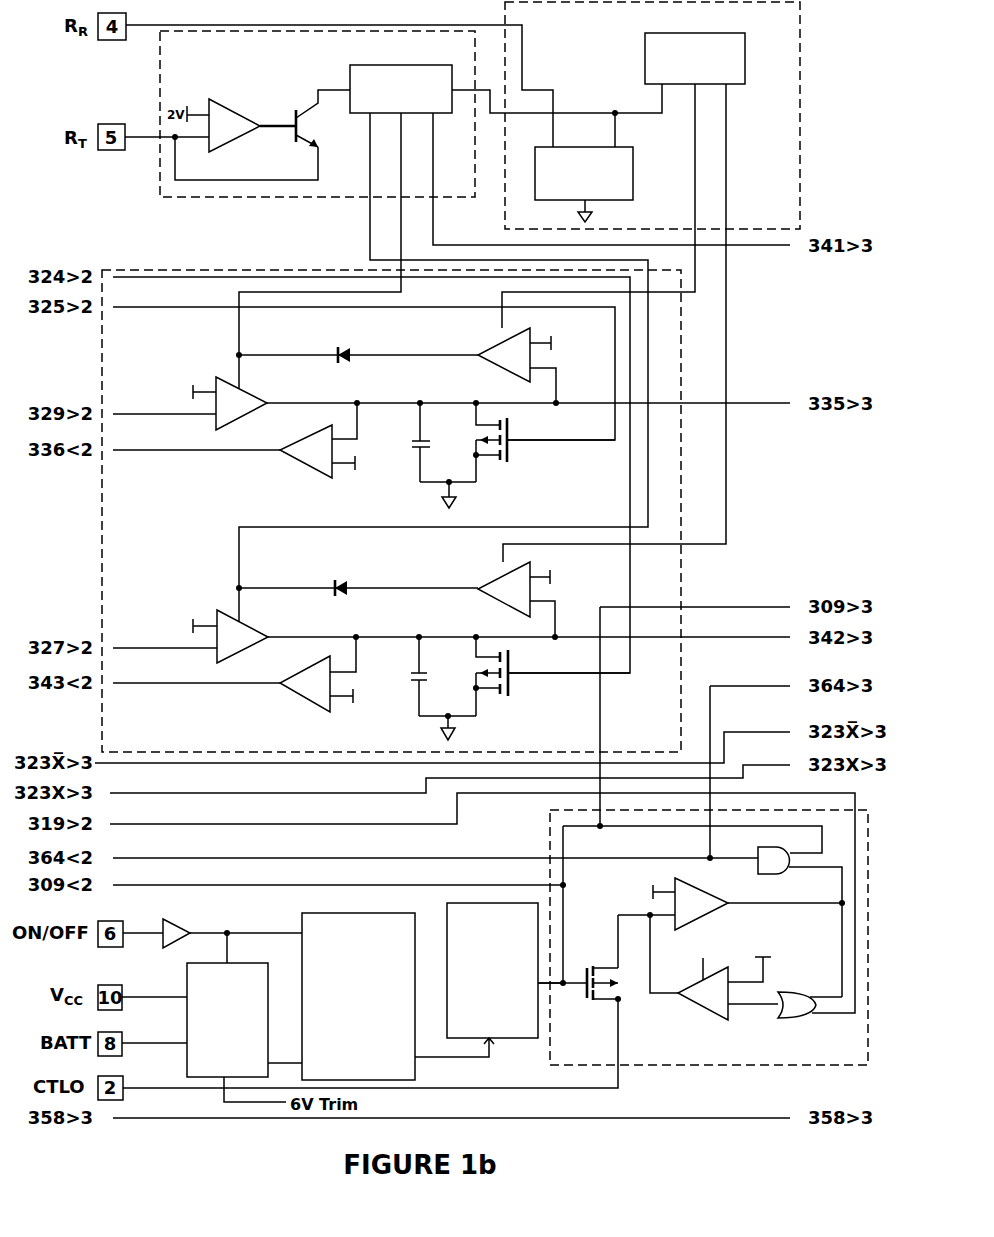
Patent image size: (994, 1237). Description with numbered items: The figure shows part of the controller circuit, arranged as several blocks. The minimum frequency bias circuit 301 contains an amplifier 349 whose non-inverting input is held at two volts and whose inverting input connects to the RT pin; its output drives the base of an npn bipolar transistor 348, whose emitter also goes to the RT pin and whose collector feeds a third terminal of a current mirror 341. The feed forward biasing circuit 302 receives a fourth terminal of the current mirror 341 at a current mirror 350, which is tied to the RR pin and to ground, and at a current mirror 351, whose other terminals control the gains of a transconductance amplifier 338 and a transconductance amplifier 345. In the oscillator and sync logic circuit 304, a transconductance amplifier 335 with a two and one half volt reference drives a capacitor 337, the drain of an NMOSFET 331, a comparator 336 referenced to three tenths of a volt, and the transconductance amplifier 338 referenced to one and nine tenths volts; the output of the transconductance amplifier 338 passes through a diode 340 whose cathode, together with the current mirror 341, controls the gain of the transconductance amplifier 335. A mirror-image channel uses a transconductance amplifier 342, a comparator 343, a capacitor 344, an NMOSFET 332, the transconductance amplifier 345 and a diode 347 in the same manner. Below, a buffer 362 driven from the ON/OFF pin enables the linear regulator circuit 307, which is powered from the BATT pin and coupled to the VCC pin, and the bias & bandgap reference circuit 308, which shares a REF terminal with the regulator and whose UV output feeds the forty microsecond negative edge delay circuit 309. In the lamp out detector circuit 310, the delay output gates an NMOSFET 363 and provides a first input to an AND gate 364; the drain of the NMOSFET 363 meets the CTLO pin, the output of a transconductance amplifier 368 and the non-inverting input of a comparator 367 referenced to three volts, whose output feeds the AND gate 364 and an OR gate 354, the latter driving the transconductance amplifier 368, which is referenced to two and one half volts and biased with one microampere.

The minimum frequency bias circuit 301 is at (262, 202).
The feed forward biasing circuit 302 is at (505, 218).
The oscillator and sync logic circuit 304 is at (192, 270).
The linear regulator circuit 307 is at (187, 972).
The bias & bandgap reference circuit 308 is at (299, 920).
The negative edge delay circuit 309 is at (446, 907).
The lamp out detector circuit 310 is at (549, 828).
The NMOSFET 331 is at (544, 442).
The NMOSFET 332 is at (551, 676).
The transconductance amplifier 335 is at (219, 400).
The comparator 336 is at (334, 440).
The capacitor 337 is at (405, 442).
The transconductance amplifier 338 is at (539, 363).
The diode 340 is at (358, 343).
The current mirror 341 is at (401, 89).
The transconductance amplifier 342 is at (219, 633).
The comparator 343 is at (333, 674).
The capacitor 344 is at (403, 676).
The transconductance amplifier 345 is at (539, 597).
The diode 347 is at (358, 577).
The npn bipolar transistor 348 is at (294, 114).
The amplifier 349 is at (241, 150).
The current mirror 350 is at (584, 184).
The current mirror 351 is at (695, 58).
The OR gate 354 is at (810, 994).
The buffer 362 is at (181, 921).
The NMOSFET 363 is at (372, 1017).
The AND gate 364 is at (782, 917).
The comparator 367 is at (733, 902).
The transconductance amplifier 368 is at (716, 981).